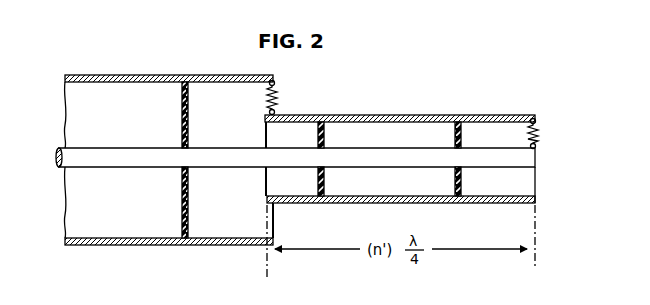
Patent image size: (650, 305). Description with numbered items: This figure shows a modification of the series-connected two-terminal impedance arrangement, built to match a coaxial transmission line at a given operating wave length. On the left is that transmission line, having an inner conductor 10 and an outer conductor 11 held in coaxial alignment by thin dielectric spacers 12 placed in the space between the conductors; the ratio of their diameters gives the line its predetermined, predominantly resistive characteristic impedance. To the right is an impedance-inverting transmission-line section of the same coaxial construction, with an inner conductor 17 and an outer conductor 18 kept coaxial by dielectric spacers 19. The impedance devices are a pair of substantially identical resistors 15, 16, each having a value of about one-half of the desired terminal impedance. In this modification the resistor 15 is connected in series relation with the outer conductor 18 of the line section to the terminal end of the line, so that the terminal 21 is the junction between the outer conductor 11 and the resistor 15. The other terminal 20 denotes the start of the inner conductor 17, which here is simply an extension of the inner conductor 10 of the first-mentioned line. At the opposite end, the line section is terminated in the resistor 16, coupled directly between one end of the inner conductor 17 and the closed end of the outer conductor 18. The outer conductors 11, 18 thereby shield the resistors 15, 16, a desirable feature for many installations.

The inner conductor 10 is at (150, 131).
The outer conductor 11 is at (187, 75).
The dielectric spacers 12 is at (188, 117).
The resistor 15 is at (277, 96).
The resistor 16 is at (538, 136).
The inner conductor 17 is at (435, 148).
The outer conductor 18 is at (435, 115).
The dielectric spacers 19 is at (324, 133).
The terminal 20 is at (263, 169).
The terminal 21 is at (275, 82).